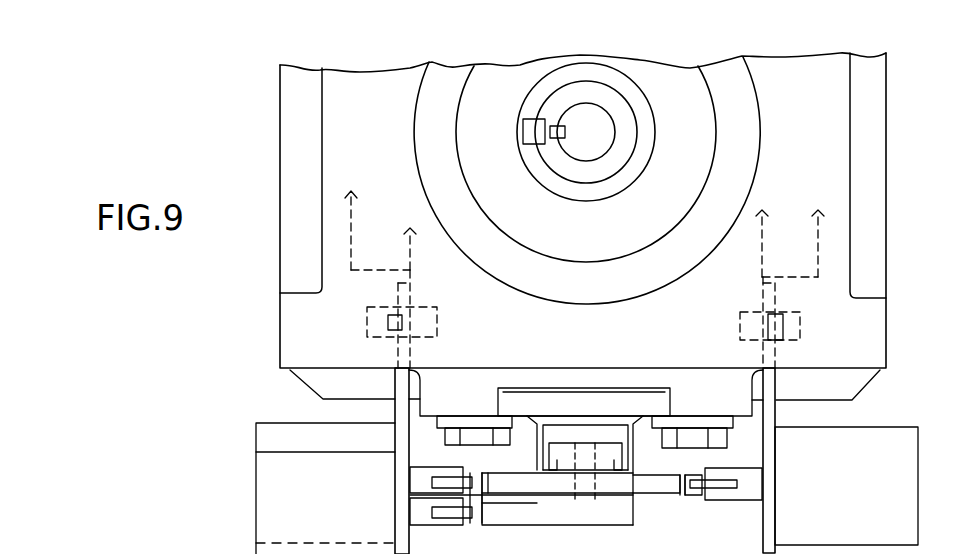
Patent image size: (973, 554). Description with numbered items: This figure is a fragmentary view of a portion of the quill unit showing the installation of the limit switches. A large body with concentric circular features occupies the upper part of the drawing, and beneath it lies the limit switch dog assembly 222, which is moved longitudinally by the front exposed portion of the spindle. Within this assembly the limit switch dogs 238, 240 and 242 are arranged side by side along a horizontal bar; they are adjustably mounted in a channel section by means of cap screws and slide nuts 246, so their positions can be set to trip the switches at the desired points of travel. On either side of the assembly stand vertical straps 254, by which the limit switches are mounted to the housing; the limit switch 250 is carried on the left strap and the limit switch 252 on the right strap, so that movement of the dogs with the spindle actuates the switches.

The limit switch dog assembly 222 is at (675, 497).
The limit switch dog 238 is at (515, 517).
The limit switch dog 240 is at (663, 494).
The limit switch dog 242 is at (523, 457).
The slide nuts 246 is at (296, 548).
The limit switch 250 is at (256, 438).
The limit switch 252 is at (906, 472).
The straps 254 is at (397, 411).